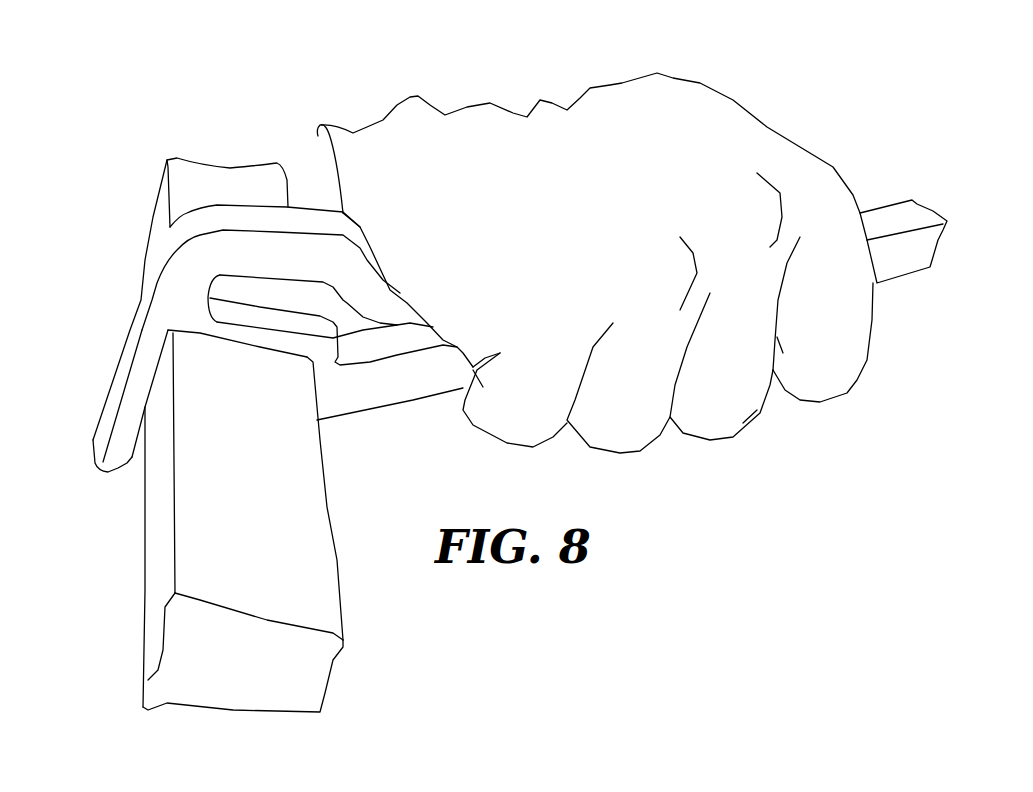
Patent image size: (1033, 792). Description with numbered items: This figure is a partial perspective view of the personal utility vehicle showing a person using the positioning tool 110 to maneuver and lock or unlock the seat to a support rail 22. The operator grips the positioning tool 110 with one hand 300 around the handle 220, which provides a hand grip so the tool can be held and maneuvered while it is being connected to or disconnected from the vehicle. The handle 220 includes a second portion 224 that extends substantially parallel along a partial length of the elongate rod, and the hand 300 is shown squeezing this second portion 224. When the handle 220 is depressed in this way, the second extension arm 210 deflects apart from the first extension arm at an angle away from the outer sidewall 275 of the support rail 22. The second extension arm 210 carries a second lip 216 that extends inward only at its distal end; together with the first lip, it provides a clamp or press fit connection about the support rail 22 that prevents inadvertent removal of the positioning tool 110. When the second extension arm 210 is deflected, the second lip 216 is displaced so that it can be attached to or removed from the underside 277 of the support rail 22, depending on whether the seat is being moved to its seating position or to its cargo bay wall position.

The hand 300 is at (663, 123).
The positioning tool 110 is at (892, 217).
The handle 220 is at (296, 217).
The second extension arm 210 is at (130, 327).
The second lip 216 is at (134, 472).
The support rail 22 is at (162, 413).
The underside of the support rail 277 is at (143, 570).
The outer sidewall of the support rail 275 is at (157, 588).
The second portion 224 is at (408, 307).